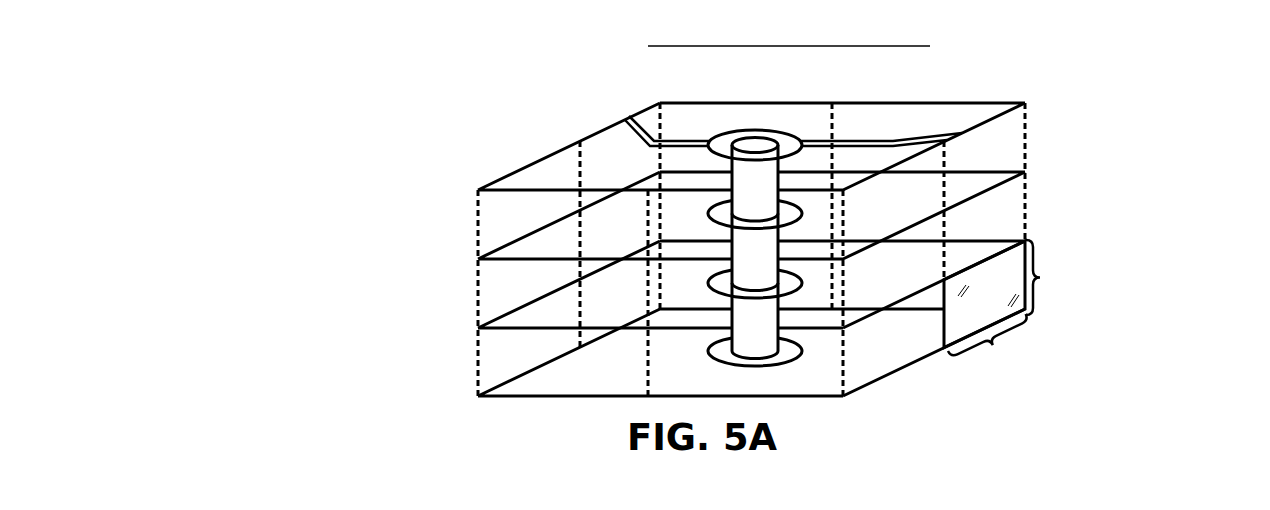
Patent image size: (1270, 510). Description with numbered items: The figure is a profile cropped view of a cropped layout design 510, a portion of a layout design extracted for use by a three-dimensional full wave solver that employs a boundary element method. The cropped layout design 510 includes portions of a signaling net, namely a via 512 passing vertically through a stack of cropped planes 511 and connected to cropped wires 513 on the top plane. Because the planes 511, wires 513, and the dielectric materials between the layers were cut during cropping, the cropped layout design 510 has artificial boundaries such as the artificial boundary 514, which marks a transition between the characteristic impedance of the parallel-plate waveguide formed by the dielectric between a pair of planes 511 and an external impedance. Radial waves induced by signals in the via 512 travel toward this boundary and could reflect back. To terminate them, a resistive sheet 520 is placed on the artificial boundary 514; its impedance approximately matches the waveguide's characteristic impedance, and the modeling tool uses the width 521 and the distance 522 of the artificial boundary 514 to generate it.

The cropped layout design 510 is at (1191, 71).
The cropped planes 511 is at (478, 191).
The via 512 is at (732, 189).
The cropped wires 513 is at (845, 140).
The artificial boundary 514 is at (941, 320).
The resistive sheet 520 is at (1018, 244).
The width 521 is at (1008, 349).
The distance 522 is at (1092, 277).